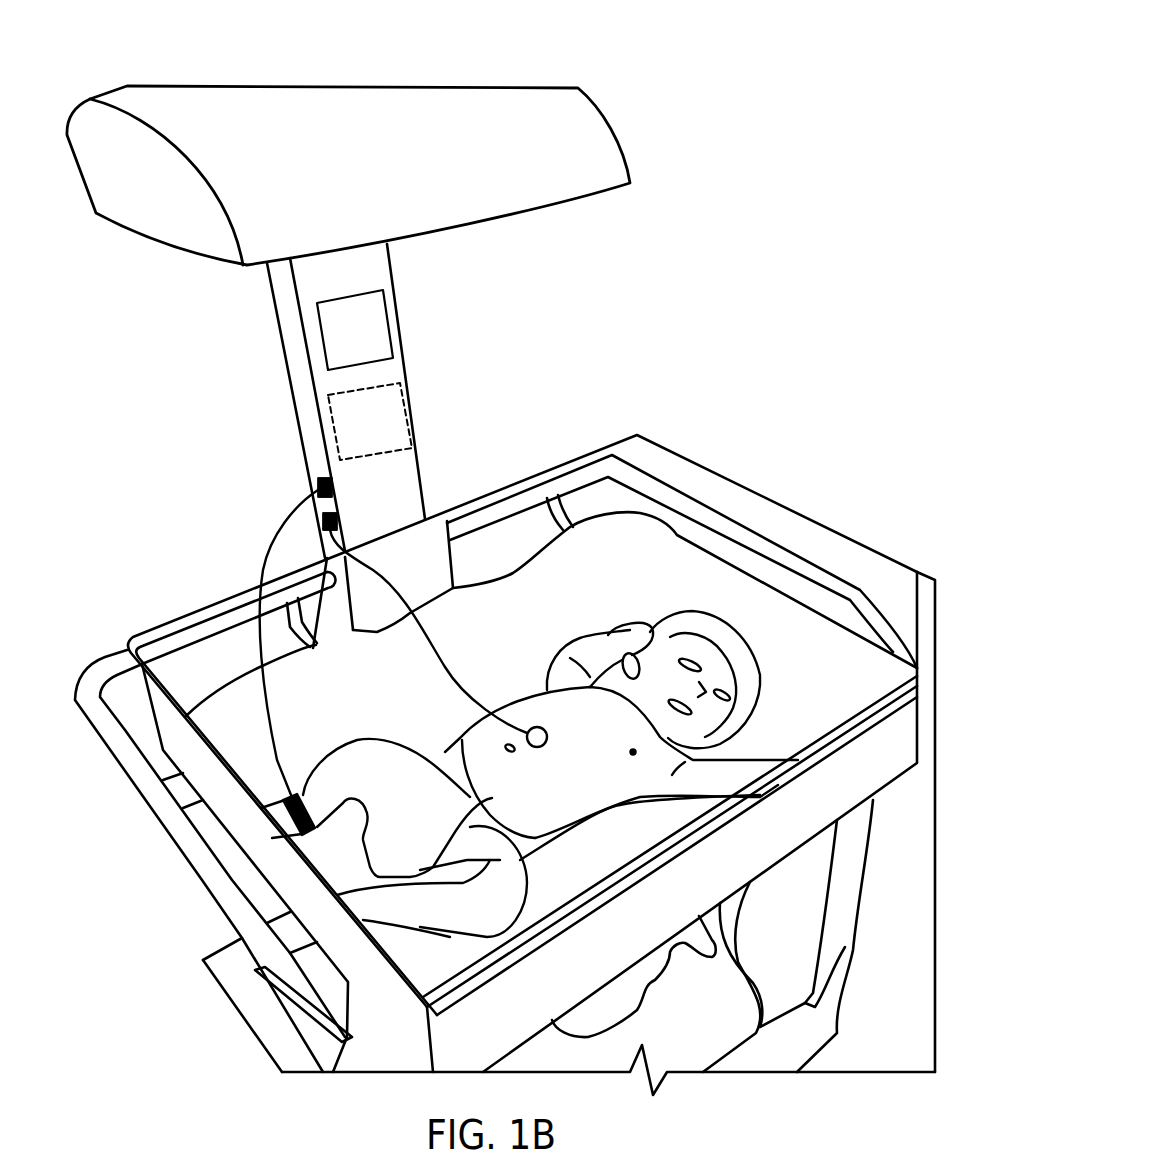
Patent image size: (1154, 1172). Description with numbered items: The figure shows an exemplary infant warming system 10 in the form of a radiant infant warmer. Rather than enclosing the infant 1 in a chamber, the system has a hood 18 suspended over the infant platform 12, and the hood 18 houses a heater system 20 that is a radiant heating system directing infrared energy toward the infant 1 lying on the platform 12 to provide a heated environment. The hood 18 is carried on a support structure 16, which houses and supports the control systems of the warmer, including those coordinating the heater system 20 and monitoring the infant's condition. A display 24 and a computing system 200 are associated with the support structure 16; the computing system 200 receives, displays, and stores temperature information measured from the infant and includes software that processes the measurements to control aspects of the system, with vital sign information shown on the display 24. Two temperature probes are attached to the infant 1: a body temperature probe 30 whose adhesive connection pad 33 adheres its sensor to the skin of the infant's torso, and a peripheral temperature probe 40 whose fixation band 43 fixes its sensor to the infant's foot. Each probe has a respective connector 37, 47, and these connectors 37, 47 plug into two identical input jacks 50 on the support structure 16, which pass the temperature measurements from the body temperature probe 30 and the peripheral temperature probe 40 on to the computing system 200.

The infant warming system 10 is at (708, 55).
The hood 18 is at (180, 222).
The heater system 20 is at (607, 213).
The support structure 16 is at (425, 463).
The display 24 is at (393, 322).
The computing system 200 is at (412, 395).
The platform 12 is at (543, 577).
The infant 1 is at (753, 647).
The body temperature probe 30 is at (495, 632).
The adhesive connection pad 33 is at (548, 734).
The connector 37 is at (318, 488).
The connector 47 is at (323, 523).
The input jack 50 is at (332, 487).
The peripheral temperature probe 40 is at (274, 706).
The fixation band 43 is at (305, 836).